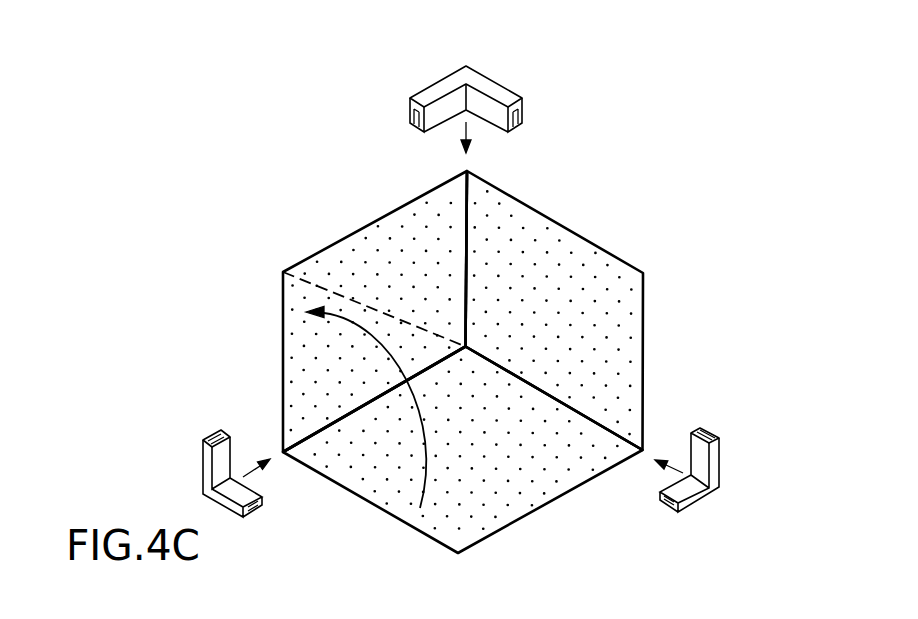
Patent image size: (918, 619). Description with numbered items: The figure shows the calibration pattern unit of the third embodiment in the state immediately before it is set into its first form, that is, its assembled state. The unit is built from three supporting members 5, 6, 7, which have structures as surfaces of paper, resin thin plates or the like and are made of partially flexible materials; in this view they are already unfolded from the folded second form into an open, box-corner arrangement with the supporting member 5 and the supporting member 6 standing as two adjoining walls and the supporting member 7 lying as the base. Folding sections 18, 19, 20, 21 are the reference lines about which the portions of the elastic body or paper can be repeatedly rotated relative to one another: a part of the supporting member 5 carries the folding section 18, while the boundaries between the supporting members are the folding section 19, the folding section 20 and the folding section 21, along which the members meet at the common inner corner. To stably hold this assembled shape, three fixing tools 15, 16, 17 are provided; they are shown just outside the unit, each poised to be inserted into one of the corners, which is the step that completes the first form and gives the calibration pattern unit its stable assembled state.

The supporting member 5 is at (383, 247).
The supporting member 6 is at (535, 250).
The supporting member 7 is at (527, 483).
The fixing tool 15 is at (221, 434).
The fixing tool 16 is at (712, 463).
The fixing tool 17 is at (497, 88).
The folding section 18 is at (338, 293).
The folding section 19 is at (318, 428).
The folding section 20 is at (548, 393).
The folding section 21 is at (467, 220).